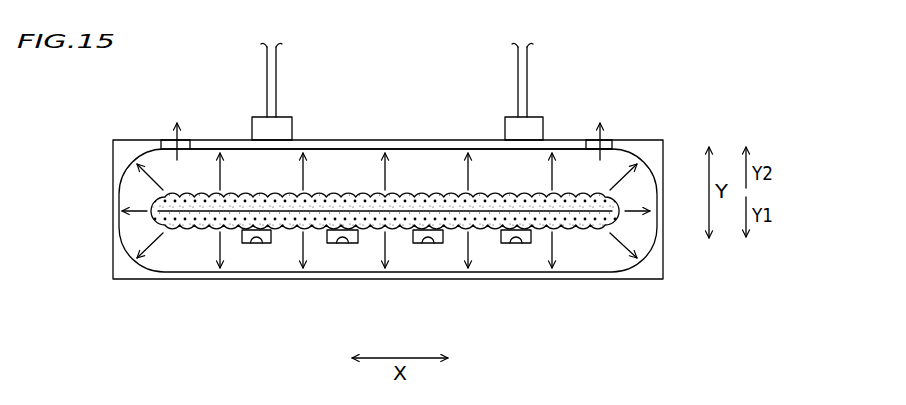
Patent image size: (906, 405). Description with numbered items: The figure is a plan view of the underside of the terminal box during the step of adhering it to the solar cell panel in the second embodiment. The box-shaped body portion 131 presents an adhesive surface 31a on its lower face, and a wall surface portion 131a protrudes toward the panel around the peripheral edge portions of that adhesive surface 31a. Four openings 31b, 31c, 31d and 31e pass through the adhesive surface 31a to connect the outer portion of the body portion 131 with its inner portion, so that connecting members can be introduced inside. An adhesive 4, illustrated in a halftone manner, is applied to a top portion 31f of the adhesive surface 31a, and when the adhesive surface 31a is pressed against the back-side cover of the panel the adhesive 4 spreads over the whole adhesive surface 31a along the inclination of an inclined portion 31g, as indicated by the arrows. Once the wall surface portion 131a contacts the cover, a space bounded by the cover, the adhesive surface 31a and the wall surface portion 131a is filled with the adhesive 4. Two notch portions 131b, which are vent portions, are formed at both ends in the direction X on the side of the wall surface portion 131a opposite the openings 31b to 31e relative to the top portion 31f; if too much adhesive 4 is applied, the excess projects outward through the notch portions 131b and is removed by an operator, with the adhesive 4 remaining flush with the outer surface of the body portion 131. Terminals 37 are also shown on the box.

The adhesive 4 is at (419, 194).
The terminal 37 is at (276, 72).
The body portion 131 is at (367, 146).
The wall surface portion 131a is at (663, 211).
The notch portions 131b is at (200, 176).
The adhesive surface 31a is at (417, 221).
The opening 31b is at (348, 243).
The opening 31c is at (438, 243).
The opening 31d is at (262, 243).
The opening 31e is at (522, 243).
The top portion 31f is at (580, 223).
The inclined portion 31g is at (637, 229).